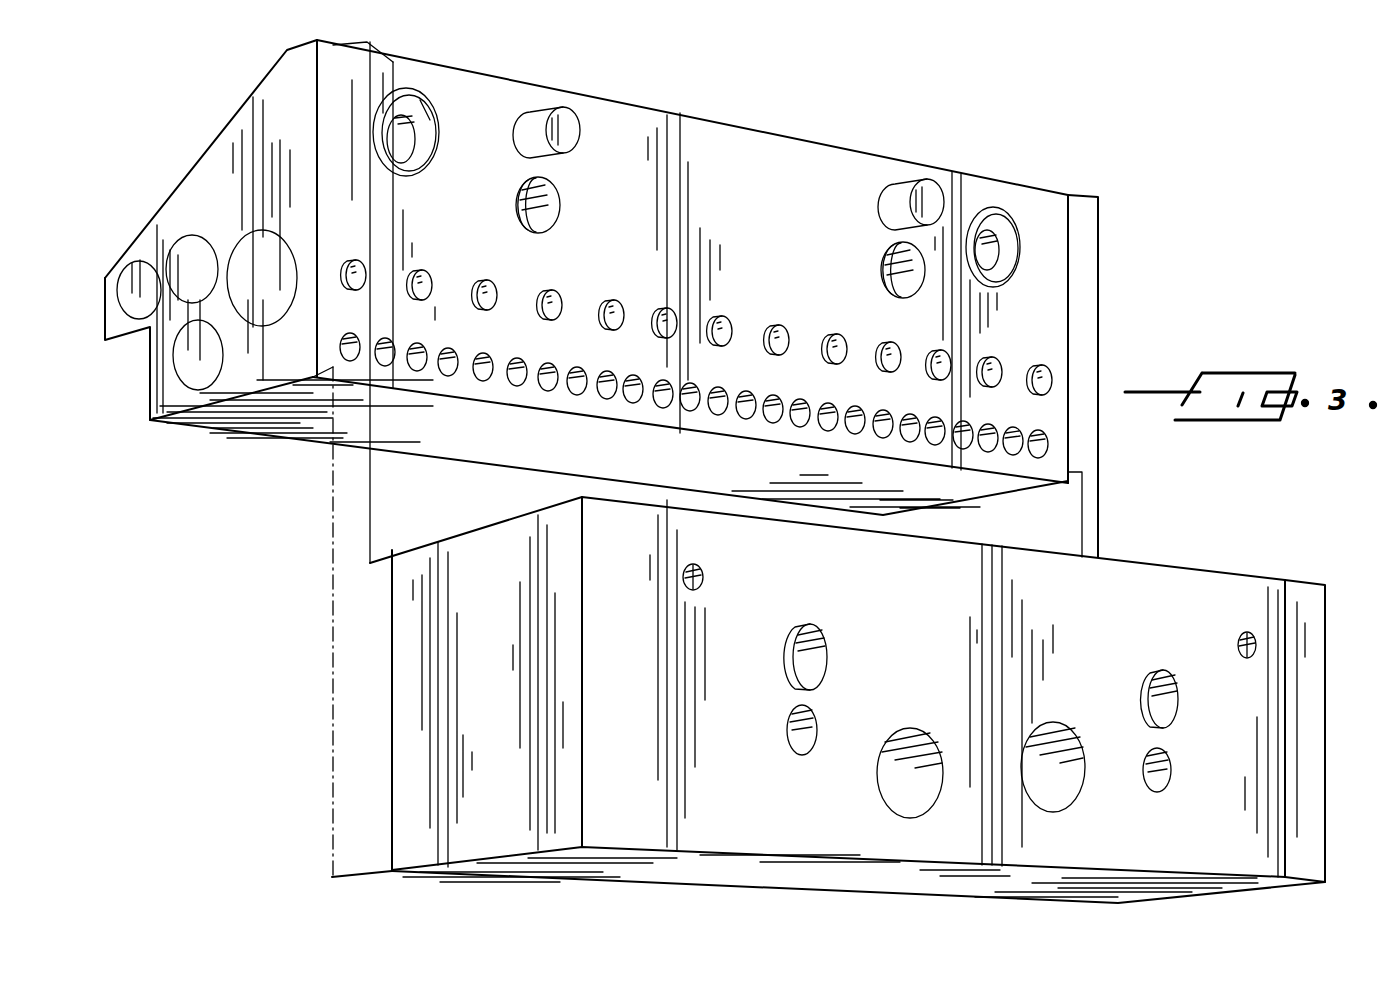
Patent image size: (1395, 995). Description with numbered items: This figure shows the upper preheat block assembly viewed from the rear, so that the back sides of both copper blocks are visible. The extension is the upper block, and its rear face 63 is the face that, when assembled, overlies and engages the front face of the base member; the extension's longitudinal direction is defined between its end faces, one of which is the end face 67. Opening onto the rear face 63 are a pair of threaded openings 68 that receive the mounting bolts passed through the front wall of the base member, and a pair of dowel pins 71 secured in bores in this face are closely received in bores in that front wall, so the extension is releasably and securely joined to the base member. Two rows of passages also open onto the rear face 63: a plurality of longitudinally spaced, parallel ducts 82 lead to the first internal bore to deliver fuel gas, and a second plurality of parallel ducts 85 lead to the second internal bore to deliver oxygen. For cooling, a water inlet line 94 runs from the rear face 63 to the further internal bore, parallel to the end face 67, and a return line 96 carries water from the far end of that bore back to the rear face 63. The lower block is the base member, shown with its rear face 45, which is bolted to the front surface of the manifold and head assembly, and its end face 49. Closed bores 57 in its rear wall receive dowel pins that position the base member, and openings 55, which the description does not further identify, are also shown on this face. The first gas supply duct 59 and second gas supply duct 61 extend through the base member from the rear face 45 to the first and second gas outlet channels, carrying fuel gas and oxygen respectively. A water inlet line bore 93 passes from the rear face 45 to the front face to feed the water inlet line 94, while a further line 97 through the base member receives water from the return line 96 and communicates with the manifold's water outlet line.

The rear face of base member 45 is at (770, 835).
The end face of base member 49 is at (480, 843).
The port 55 is at (817, 675).
The closed bore 57 is at (813, 742).
The first gas supply duct 59 is at (912, 803).
The second gas supply duct 61 is at (1042, 793).
The rear face of extension 63 is at (820, 165).
The end face of extension 67 is at (208, 182).
The threaded opening 68 is at (552, 207).
The dowel pin 71 is at (530, 143).
The ducts of first duct means 82 is at (550, 383).
The ducts of second duct means 85 is at (598, 318).
The water inlet line bore 93 is at (703, 573).
The water inlet line 94 is at (412, 143).
The return line 96 is at (993, 252).
The further line 97 is at (1248, 650).